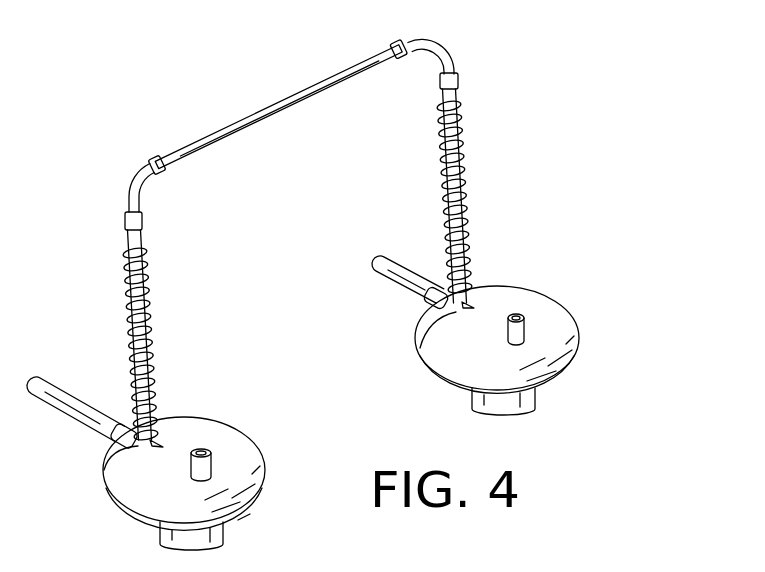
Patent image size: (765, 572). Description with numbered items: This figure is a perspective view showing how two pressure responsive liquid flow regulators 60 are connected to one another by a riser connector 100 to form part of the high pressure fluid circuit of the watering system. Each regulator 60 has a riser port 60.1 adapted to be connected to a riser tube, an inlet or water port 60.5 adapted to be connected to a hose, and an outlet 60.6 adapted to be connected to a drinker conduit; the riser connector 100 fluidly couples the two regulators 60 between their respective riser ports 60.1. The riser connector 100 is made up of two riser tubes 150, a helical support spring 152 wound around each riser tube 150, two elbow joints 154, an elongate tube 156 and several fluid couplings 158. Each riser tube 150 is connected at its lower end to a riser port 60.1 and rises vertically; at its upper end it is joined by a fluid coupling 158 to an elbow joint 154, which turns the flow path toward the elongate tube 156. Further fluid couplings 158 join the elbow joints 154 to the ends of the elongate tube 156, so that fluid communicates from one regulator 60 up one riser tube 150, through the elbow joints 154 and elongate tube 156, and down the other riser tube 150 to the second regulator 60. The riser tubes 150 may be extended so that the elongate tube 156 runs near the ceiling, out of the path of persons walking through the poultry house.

The riser connector 100 is at (294, 116).
The elongate tube 156 is at (297, 92).
The elbow joint 154 is at (136, 183).
The fluid coupling 158 is at (158, 176).
The riser tube 150 is at (143, 238).
The helical support spring 152 is at (148, 297).
The regulator 60 is at (247, 521).
The riser port 60.1 is at (109, 472).
The inlet 60.5 is at (214, 466).
The outlet 60.6 is at (117, 435).